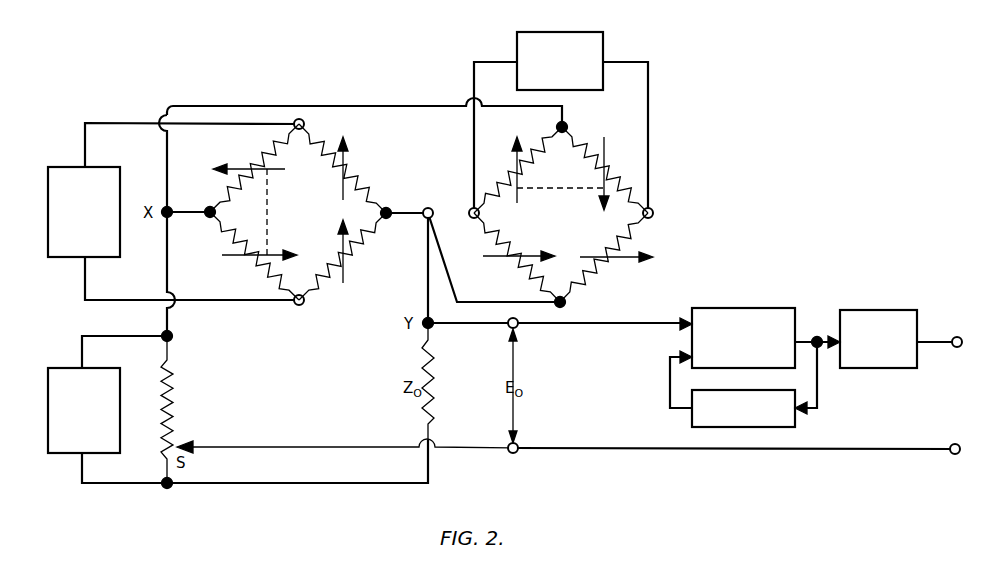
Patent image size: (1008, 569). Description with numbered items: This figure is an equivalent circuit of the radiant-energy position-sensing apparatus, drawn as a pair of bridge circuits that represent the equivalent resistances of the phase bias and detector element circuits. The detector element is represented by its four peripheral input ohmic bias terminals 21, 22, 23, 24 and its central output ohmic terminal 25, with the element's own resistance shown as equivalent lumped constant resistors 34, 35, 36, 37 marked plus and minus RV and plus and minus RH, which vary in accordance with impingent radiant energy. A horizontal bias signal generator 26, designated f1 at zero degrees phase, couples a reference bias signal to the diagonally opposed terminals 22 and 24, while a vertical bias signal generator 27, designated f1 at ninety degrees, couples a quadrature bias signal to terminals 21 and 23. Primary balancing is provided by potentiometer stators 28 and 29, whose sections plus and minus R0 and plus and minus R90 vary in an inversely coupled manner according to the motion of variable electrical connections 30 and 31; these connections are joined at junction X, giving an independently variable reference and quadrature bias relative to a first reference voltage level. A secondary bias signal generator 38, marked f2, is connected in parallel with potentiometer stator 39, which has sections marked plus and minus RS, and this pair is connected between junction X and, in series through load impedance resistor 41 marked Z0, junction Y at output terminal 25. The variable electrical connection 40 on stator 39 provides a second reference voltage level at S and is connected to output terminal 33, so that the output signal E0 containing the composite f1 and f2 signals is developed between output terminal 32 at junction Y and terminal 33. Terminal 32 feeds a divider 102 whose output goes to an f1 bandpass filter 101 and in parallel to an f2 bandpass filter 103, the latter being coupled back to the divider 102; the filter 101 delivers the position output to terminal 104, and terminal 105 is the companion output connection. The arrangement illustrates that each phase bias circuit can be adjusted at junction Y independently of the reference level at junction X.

The input ohmic bias terminal 21 is at (303, 120).
The input ohmic bias terminal 22 is at (653, 210).
The input ohmic bias terminal 23 is at (303, 304).
The input ohmic bias terminal 24 is at (462, 229).
The output ohmic terminal 25 is at (428, 206).
The horizontal bias signal generator 26 is at (525, 42).
The vertical bias signal generator 27 is at (98, 170).
The potentiometer stator 28 is at (596, 166).
The potentiometer stator 29 is at (260, 174).
The variable electrical connection 30 is at (566, 124).
The variable electrical connection 31 is at (207, 207).
The output terminal 32 is at (518, 327).
The output terminal 33 is at (520, 443).
The equivalent lumped constant resistor 34 is at (329, 155).
The equivalent lumped constant resistor 35 is at (623, 232).
The equivalent lumped constant resistor 36 is at (330, 260).
The equivalent lumped constant resistor 37 is at (507, 235).
The secondary bias signal generator 38 is at (72, 445).
The potentiometer stator 39 is at (172, 393).
The variable electrical connection 40 is at (181, 442).
The load impedance resistor 41 is at (433, 365).
The f1 bandpass filter 101 is at (902, 315).
The divider 102 is at (773, 315).
The f2 bandpass filter 103 is at (770, 422).
The output terminal 104 is at (955, 348).
The output terminal 105 is at (950, 456).